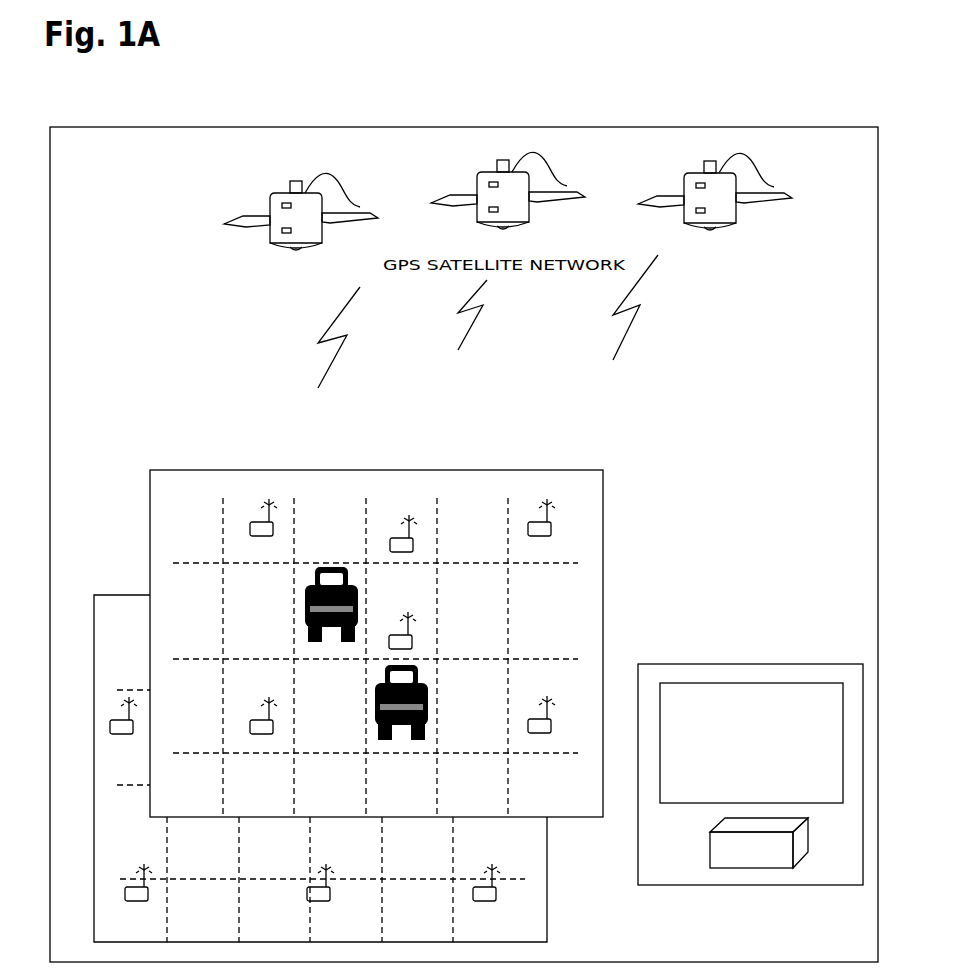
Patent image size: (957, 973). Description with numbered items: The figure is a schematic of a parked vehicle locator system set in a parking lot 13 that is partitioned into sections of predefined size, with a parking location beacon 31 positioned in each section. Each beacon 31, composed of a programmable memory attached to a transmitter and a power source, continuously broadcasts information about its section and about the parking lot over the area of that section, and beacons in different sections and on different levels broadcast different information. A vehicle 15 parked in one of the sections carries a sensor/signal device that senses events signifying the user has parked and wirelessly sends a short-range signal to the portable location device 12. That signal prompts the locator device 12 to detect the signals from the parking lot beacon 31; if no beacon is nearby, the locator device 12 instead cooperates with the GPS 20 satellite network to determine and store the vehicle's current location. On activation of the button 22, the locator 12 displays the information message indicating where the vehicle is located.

The GPS 20 is at (524, 201).
The parking lot 13 is at (348, 676).
The parking location beacon 31 is at (332, 678).
The vehicle 15 is at (366, 624).
The portable location device 12 is at (750, 744).
The button 22 is at (759, 874).